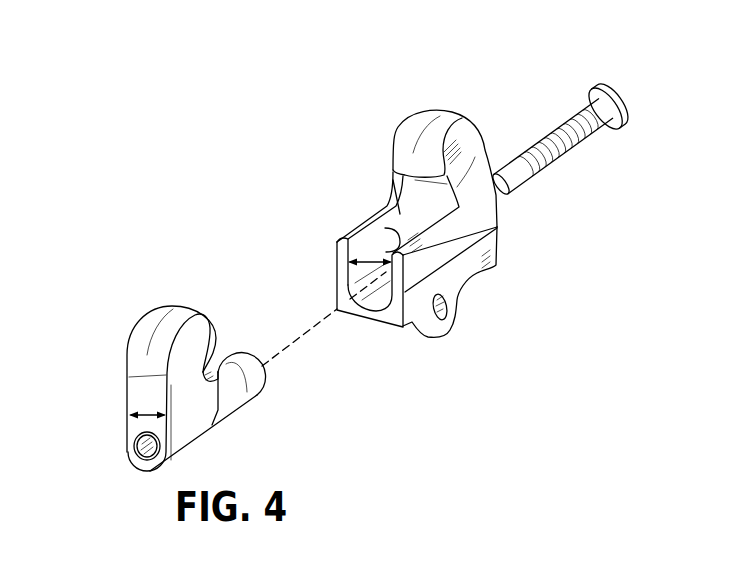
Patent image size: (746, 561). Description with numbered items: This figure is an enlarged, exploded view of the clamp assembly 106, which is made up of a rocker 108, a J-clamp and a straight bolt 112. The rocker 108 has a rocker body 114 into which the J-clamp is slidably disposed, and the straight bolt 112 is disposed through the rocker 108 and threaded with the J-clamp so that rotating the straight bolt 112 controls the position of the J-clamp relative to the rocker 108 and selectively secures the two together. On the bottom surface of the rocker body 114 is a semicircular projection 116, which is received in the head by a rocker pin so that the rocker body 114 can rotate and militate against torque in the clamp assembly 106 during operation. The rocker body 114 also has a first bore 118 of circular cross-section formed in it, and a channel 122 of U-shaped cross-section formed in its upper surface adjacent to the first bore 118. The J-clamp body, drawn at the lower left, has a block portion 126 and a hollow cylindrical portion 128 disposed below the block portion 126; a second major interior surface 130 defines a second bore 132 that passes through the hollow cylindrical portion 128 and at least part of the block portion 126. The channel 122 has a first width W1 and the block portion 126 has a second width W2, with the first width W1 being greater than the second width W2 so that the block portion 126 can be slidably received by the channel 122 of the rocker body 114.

The clamp assembly 106 is at (213, 143).
The rocker 108 is at (398, 147).
The rocker body 114 is at (419, 210).
The straight bolt 112 is at (569, 151).
The projection 116 is at (455, 313).
The first bore 118 is at (392, 225).
The channel 122 is at (358, 245).
The block portion 126 is at (207, 392).
The hollow cylindrical portion 128 is at (234, 413).
The second major interior surface 130 is at (140, 447).
The second bore 132 is at (108, 448).
The first width W1 is at (352, 264).
The second width W2 is at (132, 415).